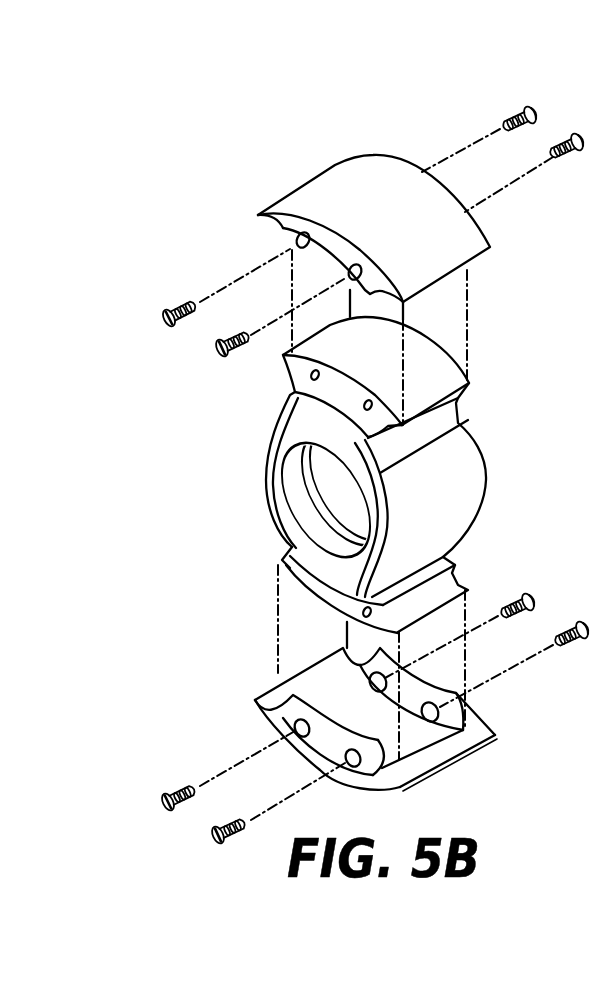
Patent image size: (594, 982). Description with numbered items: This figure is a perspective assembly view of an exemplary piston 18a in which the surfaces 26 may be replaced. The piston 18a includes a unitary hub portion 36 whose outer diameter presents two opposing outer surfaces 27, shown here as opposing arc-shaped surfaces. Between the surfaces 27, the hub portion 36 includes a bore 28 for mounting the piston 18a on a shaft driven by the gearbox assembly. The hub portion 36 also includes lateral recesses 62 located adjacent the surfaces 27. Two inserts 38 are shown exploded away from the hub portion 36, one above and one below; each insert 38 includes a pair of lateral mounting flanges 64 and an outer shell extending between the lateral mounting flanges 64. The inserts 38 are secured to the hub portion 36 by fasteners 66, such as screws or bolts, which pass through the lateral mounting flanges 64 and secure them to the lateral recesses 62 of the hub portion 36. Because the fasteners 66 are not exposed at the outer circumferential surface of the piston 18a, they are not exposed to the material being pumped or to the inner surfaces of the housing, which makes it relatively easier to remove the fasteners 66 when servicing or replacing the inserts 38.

The piston 18a is at (293, 112).
The surfaces 26 is at (358, 135).
The outer surfaces 27 is at (445, 368).
The bore 28 is at (310, 513).
The hub portion 36 is at (460, 452).
The inserts 38 is at (487, 235).
The lateral recesses 62 is at (305, 381).
The lateral mounting flanges 64 is at (283, 238).
The fasteners 66 is at (531, 108).